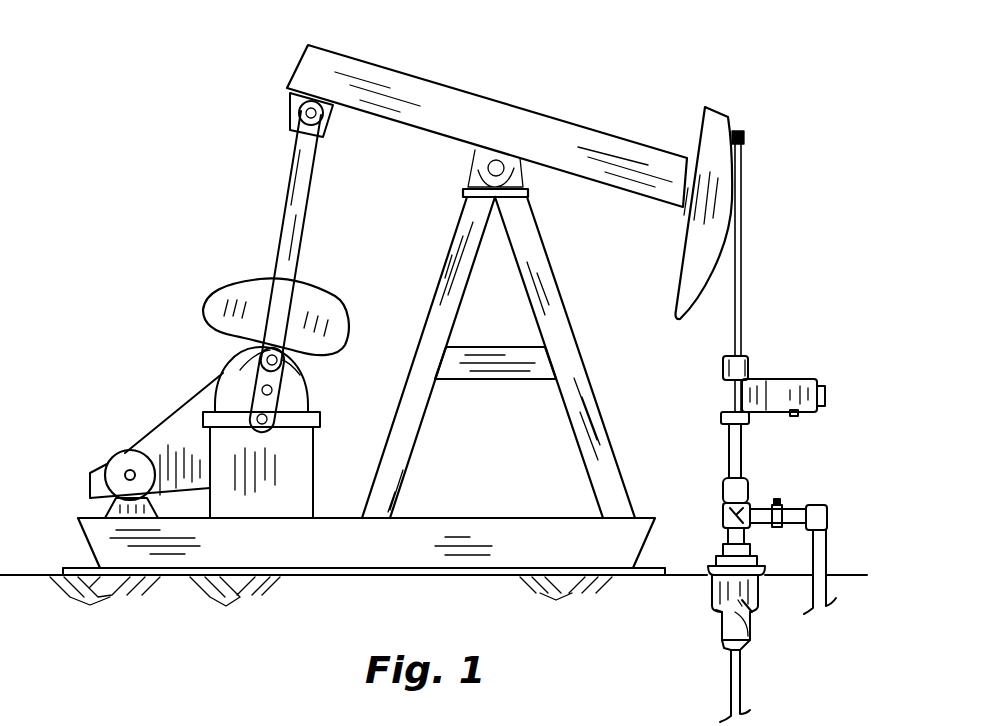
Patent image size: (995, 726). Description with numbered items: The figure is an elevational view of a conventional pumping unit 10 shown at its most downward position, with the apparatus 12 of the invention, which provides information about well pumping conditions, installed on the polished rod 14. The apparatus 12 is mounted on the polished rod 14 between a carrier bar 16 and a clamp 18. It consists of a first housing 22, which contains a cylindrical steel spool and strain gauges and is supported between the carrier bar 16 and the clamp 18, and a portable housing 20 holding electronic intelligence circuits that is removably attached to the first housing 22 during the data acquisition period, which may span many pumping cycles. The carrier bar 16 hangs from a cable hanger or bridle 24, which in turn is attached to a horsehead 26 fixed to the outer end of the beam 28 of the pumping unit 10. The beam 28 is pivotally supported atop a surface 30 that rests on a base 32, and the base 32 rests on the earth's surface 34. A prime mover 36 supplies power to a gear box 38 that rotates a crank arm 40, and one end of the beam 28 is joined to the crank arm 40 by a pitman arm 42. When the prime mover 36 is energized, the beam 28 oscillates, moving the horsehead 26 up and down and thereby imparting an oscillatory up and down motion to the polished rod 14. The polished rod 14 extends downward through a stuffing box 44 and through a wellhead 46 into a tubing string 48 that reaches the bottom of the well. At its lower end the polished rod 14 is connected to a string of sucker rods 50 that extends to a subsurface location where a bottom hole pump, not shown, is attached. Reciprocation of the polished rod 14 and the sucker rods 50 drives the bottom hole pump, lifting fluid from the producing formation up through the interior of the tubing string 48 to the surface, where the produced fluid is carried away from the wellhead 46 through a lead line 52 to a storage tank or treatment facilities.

The pumping unit 10 is at (573, 72).
The apparatus for providing information as to well pumping conditions 12 is at (857, 370).
The polished rod 14 is at (729, 452).
The carrier bar 16 is at (724, 416).
The clamp 18 is at (752, 356).
The portable housing 20 is at (794, 414).
The first housing 22 is at (753, 382).
The cable hanger or bridle 24 is at (742, 213).
The horsehead 26 is at (692, 234).
The beam 28 is at (632, 140).
The surface 30 is at (457, 262).
The base 32 is at (352, 558).
The earth's surface 34 is at (500, 566).
The prime mover 36 is at (122, 458).
The gear box 38 is at (238, 375).
The crank arm 40 is at (278, 378).
The pitman arm 42 is at (290, 205).
The stuffing box 44 is at (728, 495).
The wellhead 46 is at (720, 596).
The tubing string 48 is at (721, 634).
The string of sucker rods 50 is at (741, 670).
The lead line 52 is at (821, 554).